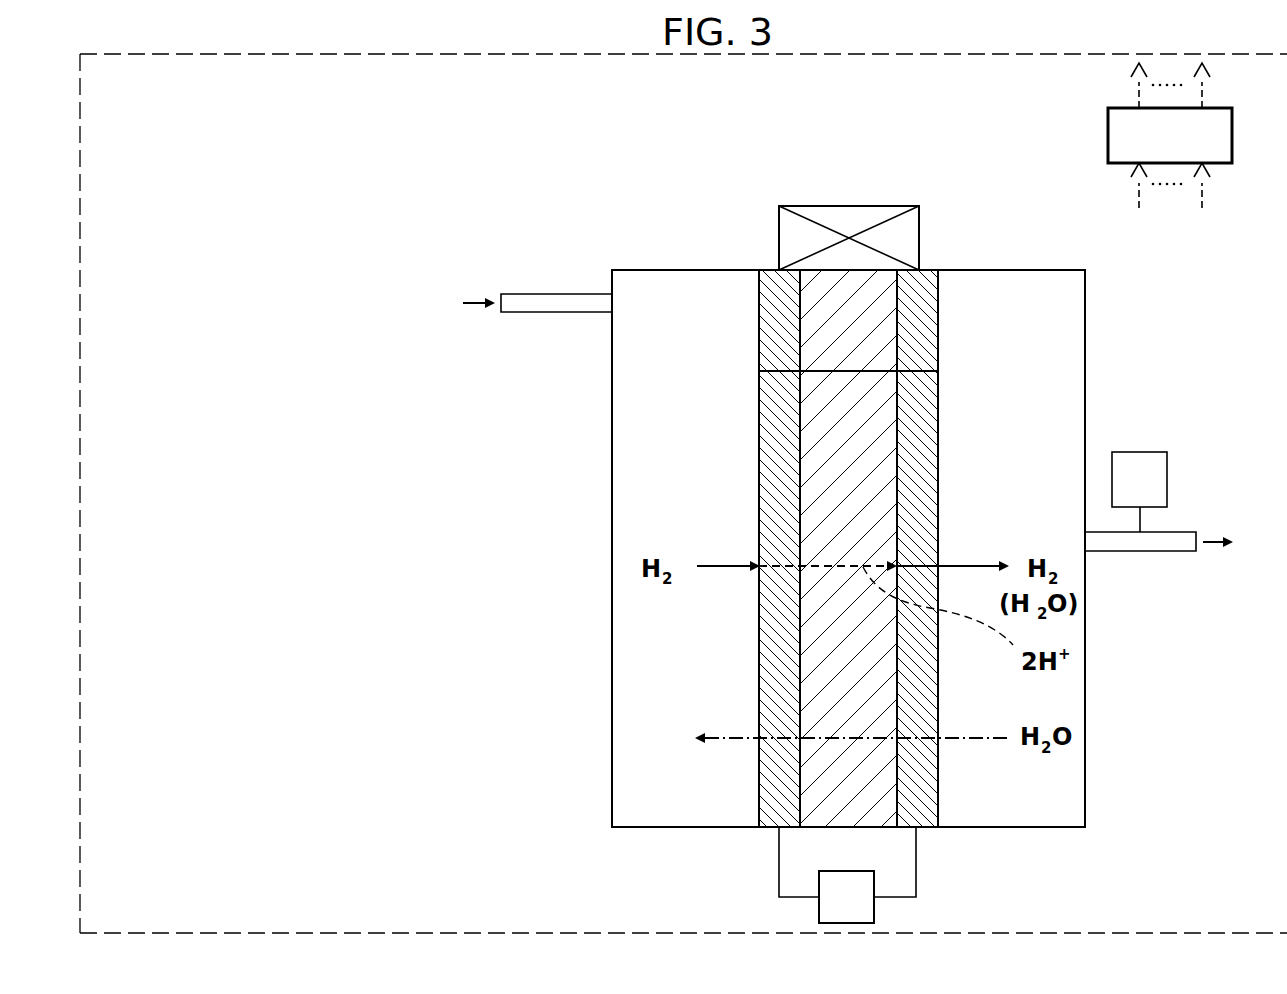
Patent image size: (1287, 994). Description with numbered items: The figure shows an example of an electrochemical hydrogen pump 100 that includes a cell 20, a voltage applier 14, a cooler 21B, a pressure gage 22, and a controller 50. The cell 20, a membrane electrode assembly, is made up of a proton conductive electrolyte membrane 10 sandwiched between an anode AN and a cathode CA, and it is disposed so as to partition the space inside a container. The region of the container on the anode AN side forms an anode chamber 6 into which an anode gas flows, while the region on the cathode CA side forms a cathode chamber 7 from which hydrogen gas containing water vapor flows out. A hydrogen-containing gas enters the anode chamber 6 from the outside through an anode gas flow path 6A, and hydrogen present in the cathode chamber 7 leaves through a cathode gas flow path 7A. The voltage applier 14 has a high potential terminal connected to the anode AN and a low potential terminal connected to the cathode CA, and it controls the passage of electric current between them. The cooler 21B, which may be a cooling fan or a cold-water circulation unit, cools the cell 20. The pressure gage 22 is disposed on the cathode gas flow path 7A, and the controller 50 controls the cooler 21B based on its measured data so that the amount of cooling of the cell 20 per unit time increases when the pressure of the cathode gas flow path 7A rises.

The electrochemical hydrogen pump 100 is at (758, 111).
The anode chamber 6 is at (693, 468).
The cathode chamber 7 is at (1024, 468).
The anode AN is at (798, 468).
The proton conductive electrolyte membrane 10 is at (869, 468).
The cathode CA is at (935, 468).
The cell 20 is at (848, 372).
The cooler 21B is at (890, 206).
The anode gas flow path 6A is at (525, 312).
The cathode gas flow path 7A is at (1173, 551).
The pressure gage 22 is at (1159, 501).
The voltage applier 14 is at (865, 910).
The controller 50 is at (1190, 149).